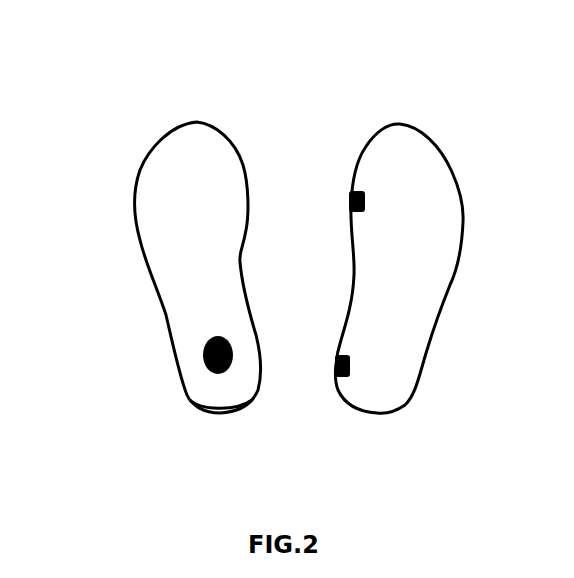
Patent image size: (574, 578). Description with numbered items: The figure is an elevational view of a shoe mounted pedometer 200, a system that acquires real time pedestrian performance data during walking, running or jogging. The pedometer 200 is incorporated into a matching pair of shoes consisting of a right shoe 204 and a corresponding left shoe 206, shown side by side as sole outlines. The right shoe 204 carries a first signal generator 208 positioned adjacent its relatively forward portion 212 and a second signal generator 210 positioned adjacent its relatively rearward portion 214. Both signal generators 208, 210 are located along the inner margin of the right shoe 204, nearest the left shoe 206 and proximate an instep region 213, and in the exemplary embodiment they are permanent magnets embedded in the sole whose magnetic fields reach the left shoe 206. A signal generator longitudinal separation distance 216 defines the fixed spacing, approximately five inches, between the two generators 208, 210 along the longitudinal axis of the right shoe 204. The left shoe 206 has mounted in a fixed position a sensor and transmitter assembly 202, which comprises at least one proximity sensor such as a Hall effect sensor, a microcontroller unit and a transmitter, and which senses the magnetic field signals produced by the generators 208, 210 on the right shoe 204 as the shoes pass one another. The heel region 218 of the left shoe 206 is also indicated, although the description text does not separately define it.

The pedometer 200 is at (396, 91).
The sensor and transmitter assembly 202 is at (205, 343).
The right shoe 204 is at (447, 285).
The left shoe 206 is at (133, 196).
The first signal generator 208 is at (365, 203).
The second signal generator 210 is at (350, 364).
The forward portion 212 is at (362, 139).
The instep region 213 is at (390, 269).
The rearward portion 214 is at (340, 411).
The signal generator longitudinal separation distance 216 is at (335, 364).
The heel region 218 is at (207, 418).